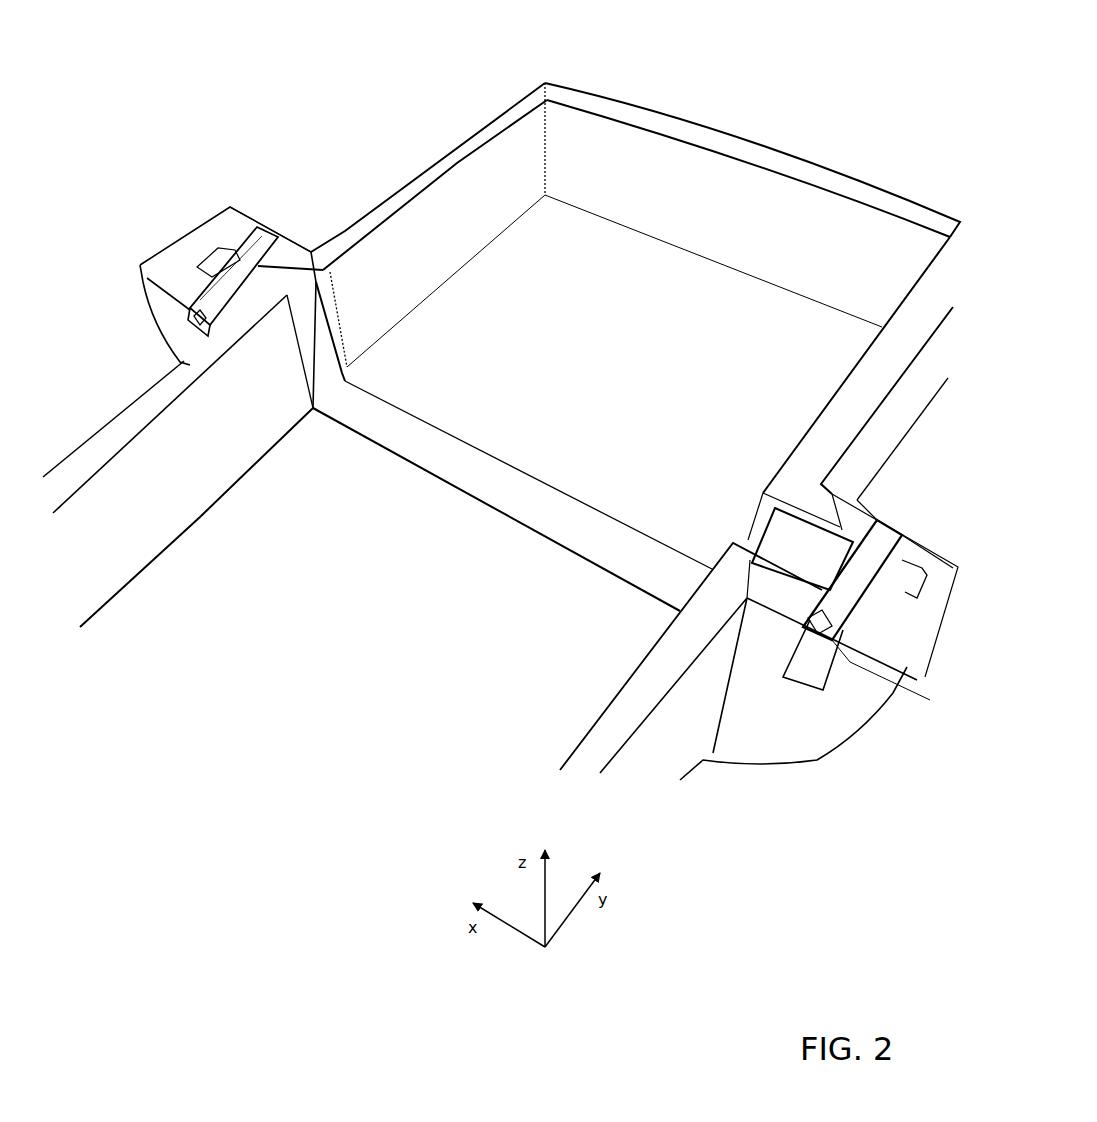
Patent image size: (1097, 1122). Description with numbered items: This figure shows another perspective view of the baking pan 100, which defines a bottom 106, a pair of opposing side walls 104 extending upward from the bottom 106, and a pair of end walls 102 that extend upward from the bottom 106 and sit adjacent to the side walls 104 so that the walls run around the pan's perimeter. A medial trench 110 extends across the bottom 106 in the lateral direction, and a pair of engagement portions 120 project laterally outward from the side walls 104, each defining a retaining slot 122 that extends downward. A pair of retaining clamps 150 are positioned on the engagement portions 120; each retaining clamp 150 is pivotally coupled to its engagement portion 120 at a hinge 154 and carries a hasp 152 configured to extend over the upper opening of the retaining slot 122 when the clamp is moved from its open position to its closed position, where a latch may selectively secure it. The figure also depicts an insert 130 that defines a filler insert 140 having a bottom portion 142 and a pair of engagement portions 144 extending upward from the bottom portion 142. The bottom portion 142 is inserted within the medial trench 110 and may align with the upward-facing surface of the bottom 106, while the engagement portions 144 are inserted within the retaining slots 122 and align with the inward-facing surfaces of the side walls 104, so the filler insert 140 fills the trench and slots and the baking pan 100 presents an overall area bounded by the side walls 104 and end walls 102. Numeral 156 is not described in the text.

The baking pan 100 is at (352, 165).
The end walls 102 is at (745, 140).
The side walls 104 is at (430, 160).
The bottom 106 is at (650, 291).
The medial trench 110 is at (458, 427).
The engagement portions 120 is at (178, 330).
The retaining slot 122 is at (225, 247).
The insert 130 is at (530, 500).
The filler insert 140 is at (573, 510).
The bottom portion 142 is at (608, 545).
The engagement portions 144 is at (313, 327).
The retaining clamp 150 is at (256, 244).
The hasp 152 is at (213, 293).
The hinge 154 is at (268, 230).
The end element 156 is at (192, 322).